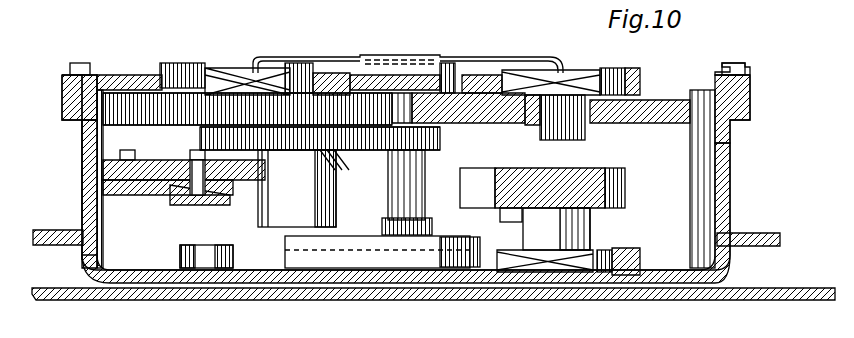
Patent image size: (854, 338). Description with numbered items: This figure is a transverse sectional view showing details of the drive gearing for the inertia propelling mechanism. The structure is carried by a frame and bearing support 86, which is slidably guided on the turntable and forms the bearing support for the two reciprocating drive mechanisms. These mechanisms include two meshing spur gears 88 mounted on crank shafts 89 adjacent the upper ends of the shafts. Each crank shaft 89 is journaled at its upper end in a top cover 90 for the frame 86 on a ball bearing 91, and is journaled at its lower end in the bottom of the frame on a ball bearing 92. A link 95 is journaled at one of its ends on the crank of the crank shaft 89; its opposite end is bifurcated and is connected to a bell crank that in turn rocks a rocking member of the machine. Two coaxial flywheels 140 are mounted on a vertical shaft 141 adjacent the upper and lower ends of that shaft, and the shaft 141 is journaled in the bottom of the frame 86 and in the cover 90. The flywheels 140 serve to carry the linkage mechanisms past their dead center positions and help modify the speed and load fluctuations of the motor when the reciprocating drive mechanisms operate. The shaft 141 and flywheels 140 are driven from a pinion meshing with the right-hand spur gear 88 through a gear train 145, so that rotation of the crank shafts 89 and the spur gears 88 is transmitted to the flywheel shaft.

The frame and bearing support 86 is at (110, 250).
The spur gear 88 is at (115, 95).
The crank shaft 89 is at (598, 142).
The top cover 90 is at (660, 68).
The ball bearing 91 is at (222, 75).
The ball bearing 92 is at (595, 277).
The link 95 is at (620, 186).
The flywheel 140 is at (340, 250).
The vertical shaft 141 is at (395, 200).
The gear train 145 is at (366, 148).